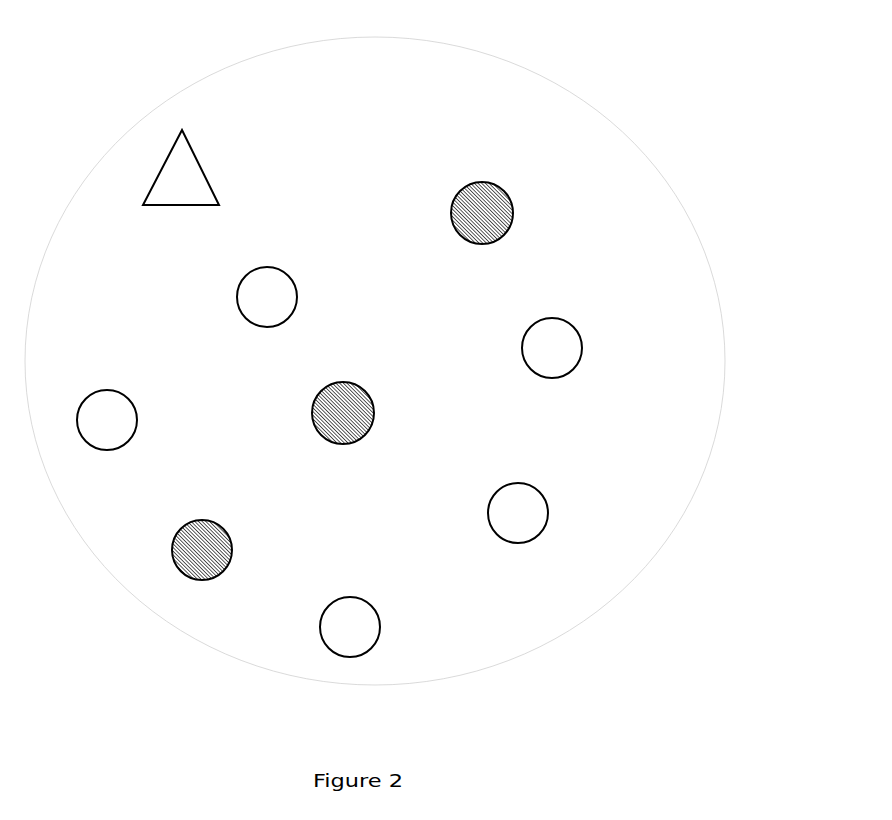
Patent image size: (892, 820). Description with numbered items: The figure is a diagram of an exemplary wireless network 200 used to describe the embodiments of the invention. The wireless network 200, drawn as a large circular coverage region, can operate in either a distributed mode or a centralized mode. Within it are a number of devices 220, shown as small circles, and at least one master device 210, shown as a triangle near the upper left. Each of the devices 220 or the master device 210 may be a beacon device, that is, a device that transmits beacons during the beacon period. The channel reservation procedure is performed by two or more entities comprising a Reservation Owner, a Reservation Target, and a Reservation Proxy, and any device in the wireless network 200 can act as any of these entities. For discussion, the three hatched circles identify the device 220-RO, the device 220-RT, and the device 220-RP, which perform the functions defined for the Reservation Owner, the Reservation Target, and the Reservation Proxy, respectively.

The wireless network 200 is at (470, 57).
The master device 210 is at (195, 152).
The devices 220 is at (287, 265).
The device acting as Reservation Owner 220-RO is at (502, 190).
The device acting as Reservation Proxy 220-RP is at (365, 385).
The device acting as Reservation Target 220-RT is at (222, 525).